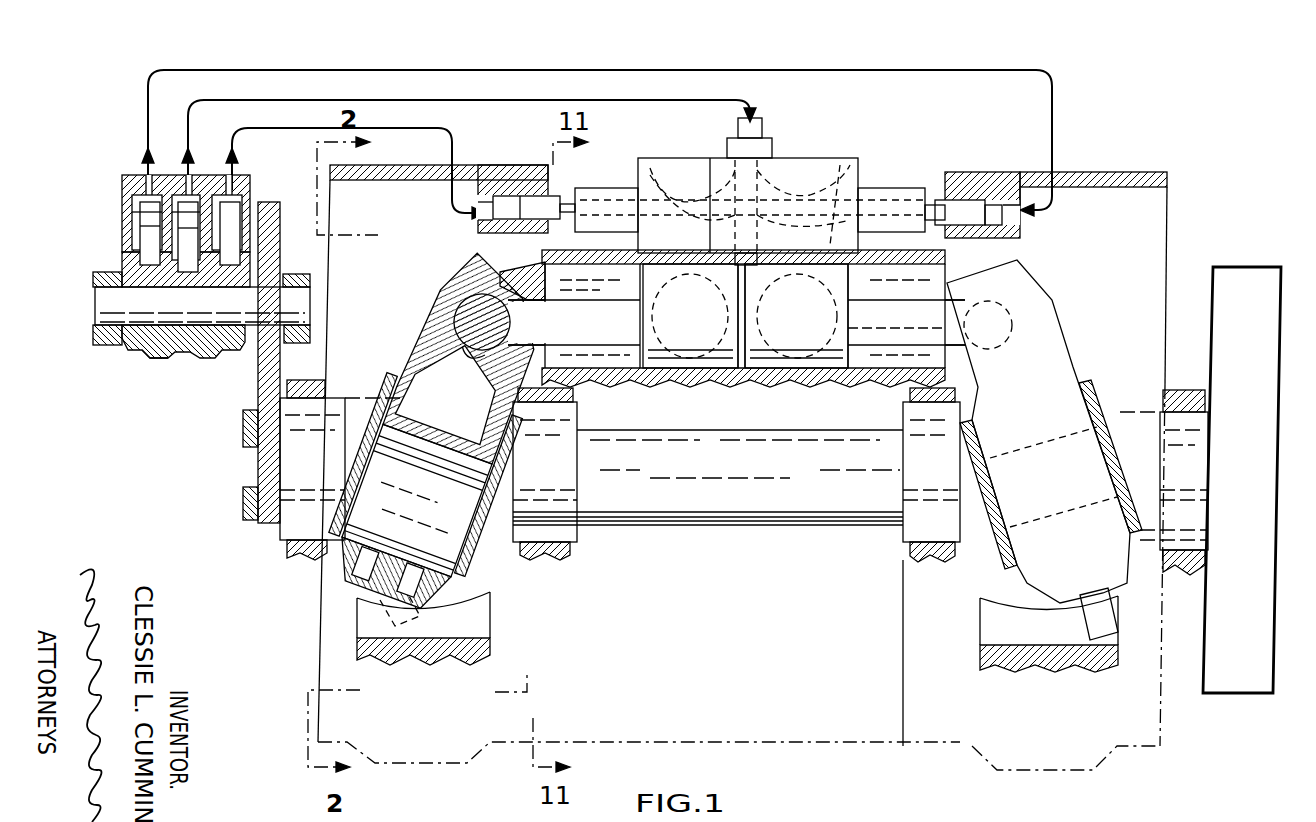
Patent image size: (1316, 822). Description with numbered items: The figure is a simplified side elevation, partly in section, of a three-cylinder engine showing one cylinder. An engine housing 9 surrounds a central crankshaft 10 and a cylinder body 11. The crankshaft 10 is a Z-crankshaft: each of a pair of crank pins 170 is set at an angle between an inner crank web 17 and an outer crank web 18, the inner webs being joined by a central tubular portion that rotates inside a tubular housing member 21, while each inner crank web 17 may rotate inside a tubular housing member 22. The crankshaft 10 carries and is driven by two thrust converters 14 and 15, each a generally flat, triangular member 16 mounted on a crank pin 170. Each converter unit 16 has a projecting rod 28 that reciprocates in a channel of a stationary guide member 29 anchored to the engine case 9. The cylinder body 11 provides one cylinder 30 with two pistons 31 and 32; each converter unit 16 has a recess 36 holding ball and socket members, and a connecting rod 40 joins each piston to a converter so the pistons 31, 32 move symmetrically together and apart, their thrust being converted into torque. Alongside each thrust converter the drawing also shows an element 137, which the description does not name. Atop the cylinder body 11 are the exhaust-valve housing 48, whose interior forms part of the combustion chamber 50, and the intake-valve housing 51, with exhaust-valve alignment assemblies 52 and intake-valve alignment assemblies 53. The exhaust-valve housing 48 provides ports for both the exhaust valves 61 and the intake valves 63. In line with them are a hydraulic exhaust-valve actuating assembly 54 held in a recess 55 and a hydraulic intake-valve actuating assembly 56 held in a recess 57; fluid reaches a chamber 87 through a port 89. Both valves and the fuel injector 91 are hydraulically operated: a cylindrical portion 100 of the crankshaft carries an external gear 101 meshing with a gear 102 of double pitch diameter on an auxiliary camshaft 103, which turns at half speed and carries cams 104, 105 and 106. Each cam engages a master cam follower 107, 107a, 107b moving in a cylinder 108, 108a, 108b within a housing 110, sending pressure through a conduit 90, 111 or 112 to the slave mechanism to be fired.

The engine housing 9 is at (405, 172).
The crankshaft 10 is at (812, 532).
The cylinder body 11 is at (945, 262).
The thrust converter 14 is at (1072, 336).
The thrust converter 15 is at (432, 290).
The triangular member 16 is at (455, 322).
The inner crank web 17 is at (560, 478).
The outer crank web 18 is at (329, 464).
The tubular housing member 21 is at (855, 478).
The tubular housing member 22 is at (578, 558).
The projecting rod 28 is at (392, 620).
The stationary guide member 29 is at (492, 650).
The cylinder 30 is at (912, 369).
The piston 31 is at (714, 329).
The piston 32 is at (804, 329).
The recess 36 is at (526, 276).
The connecting rod 40 is at (607, 336).
The exhaust-valve housing 48 is at (862, 163).
The combustion chamber 50 is at (745, 386).
The intake-valve housing 51 is at (636, 168).
The exhaust-valve alignment assembly 52 is at (893, 190).
The intake-valve alignment assembly 53 is at (606, 192).
The hydraulic exhaust-valve actuating assembly 54 is at (958, 200).
The recess 55 is at (992, 205).
The hydraulic intake-valve actuating assembly 56 is at (536, 196).
The recess 57 is at (510, 196).
The exhaust valve 61 is at (803, 205).
The intake valve 63 is at (692, 194).
The chamber 87 is at (495, 222).
The port 89 is at (484, 207).
The conduit 90 is at (303, 137).
The fuel injector 91 is at (732, 142).
The cylindrical portion 100 is at (258, 466).
The external gear 101 is at (258, 513).
The gear 102 is at (262, 398).
The auxiliary shaft 103 is at (100, 312).
The cam 104 is at (226, 355).
The cam 105 is at (172, 357).
The cam 106 is at (130, 253).
The cam follower 107 is at (232, 238).
The cam follower 107a is at (185, 228).
The cam follower 107b is at (140, 224).
The cylinder 108 is at (228, 222).
The cylinder 108a is at (190, 208).
The cylinder 108b is at (135, 212).
The housing 110 is at (120, 184).
The conduit 111 is at (495, 107).
The conduit 112 is at (571, 70).
The cylinder sleeve 137 is at (468, 568).
The crank pin 170 is at (457, 478).